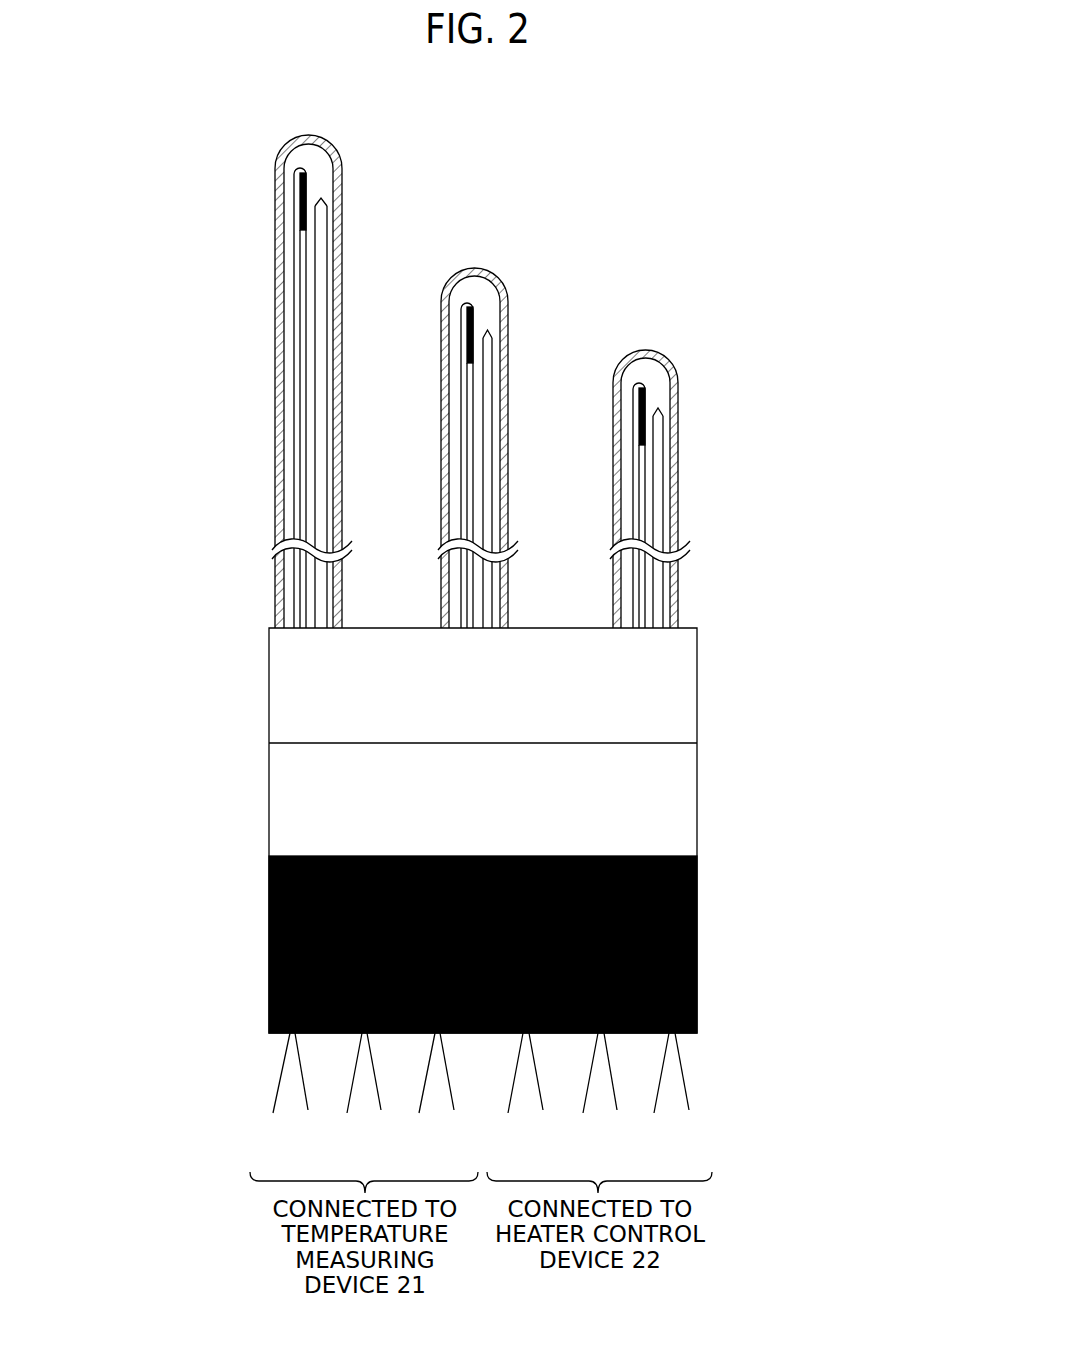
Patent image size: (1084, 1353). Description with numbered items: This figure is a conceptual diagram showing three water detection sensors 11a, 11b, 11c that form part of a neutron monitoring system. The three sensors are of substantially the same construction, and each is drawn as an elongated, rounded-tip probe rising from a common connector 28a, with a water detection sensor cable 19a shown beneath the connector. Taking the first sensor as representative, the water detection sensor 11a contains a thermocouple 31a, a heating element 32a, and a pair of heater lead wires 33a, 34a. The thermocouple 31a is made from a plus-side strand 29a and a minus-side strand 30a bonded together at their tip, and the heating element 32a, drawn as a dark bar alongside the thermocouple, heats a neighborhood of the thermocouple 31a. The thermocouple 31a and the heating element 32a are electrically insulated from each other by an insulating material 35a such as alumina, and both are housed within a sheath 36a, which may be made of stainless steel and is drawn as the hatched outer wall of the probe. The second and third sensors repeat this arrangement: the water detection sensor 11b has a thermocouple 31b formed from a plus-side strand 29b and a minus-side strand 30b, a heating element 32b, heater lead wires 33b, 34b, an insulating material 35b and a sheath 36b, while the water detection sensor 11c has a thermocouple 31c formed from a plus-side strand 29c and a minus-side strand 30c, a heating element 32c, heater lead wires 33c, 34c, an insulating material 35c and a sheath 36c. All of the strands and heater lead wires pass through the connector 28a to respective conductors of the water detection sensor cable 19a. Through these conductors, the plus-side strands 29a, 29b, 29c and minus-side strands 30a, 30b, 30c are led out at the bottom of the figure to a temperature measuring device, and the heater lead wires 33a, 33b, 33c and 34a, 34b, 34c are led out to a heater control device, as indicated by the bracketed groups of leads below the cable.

The water detection sensor 11a is at (308, 136).
The water detection sensor 11b is at (474, 268).
The water detection sensor 11c is at (645, 350).
The water detection sensor cable 19a is at (697, 923).
The connector 28a is at (697, 693).
The plus-side strand 29a is at (315, 232).
The plus-side strand 29b is at (483, 363).
The plus-side strand 29c is at (653, 445).
The minus-side strand 30a is at (326, 262).
The minus-side strand 30b is at (492, 394).
The minus-side strand 30c is at (663, 477).
The thermocouple 31a is at (320, 197).
The thermocouple 31b is at (487, 330).
The thermocouple 31c is at (658, 412).
The heating element 32a is at (300, 193).
The heating element 32b is at (467, 327).
The heating element 32c is at (639, 427).
The heater lead wire 33a is at (294, 233).
The heater lead wire 33b is at (461, 365).
The heater lead wire 33c is at (633, 465).
The heater lead wire 34a is at (300, 265).
The heater lead wire 34b is at (467, 397).
The heater lead wire 34c is at (639, 500).
The insulating material 35a is at (323, 170).
The insulating material 35b is at (490, 303).
The insulating material 35c is at (662, 385).
The sheath 36a is at (333, 143).
The sheath 36b is at (502, 278).
The sheath 36c is at (673, 360).